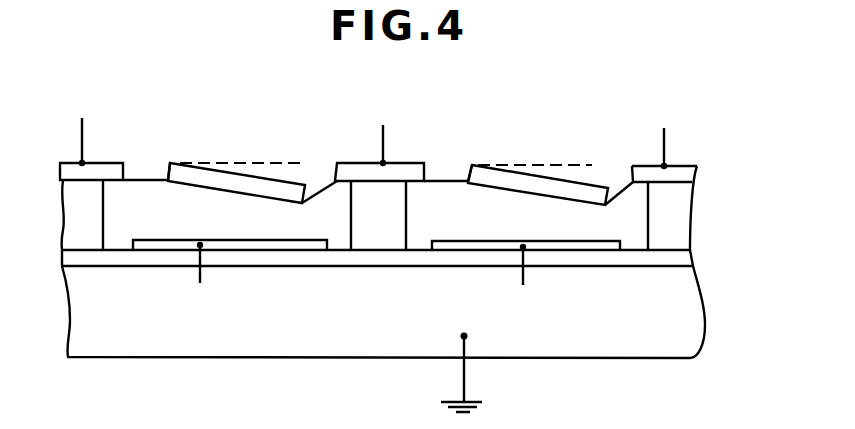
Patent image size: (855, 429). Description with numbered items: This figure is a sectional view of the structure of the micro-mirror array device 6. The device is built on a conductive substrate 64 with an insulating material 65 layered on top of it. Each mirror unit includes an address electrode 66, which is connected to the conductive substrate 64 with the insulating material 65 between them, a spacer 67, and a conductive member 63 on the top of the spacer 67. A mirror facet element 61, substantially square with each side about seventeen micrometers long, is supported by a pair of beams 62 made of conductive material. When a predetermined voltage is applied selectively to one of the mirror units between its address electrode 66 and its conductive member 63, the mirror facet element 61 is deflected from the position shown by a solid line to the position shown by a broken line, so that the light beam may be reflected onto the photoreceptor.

The micro-mirror array device 6 is at (274, 123).
The mirror facet element 61 is at (550, 181).
The beams 62 is at (445, 181).
The conductive member 63 is at (683, 172).
The conductive substrate 64 is at (698, 297).
The insulating material 65 is at (688, 262).
The address electrode 66 is at (535, 243).
The spacer 67 is at (680, 198).